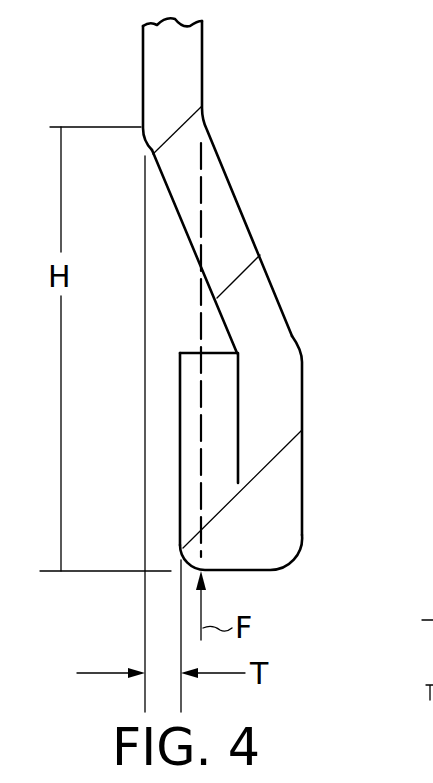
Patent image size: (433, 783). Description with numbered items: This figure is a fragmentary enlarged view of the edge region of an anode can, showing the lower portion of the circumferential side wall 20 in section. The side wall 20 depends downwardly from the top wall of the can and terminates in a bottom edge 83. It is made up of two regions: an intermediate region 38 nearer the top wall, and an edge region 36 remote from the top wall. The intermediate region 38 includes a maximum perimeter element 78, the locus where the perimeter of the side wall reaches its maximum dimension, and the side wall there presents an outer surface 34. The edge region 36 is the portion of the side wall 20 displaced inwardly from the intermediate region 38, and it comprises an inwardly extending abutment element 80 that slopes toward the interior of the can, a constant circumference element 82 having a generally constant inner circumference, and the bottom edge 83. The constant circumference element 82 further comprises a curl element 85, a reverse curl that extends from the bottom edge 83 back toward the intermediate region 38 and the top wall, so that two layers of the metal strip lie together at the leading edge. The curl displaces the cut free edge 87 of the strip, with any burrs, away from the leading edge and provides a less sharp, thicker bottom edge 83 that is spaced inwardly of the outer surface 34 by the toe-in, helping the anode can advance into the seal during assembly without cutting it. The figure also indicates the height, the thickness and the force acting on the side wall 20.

The side wall 20 is at (245, 86).
The maximum perimeter element 78 is at (141, 33).
The intermediate region 38 is at (128, 71).
The outer surface 34 is at (141, 108).
The inwardly extending abutment element 80 is at (232, 174).
The edge region 36 is at (281, 288).
The cut free edge 87 is at (189, 352).
The constant circumference element 82 is at (302, 393).
The curl element 85 is at (180, 458).
The bottom edge 83 is at (245, 572).